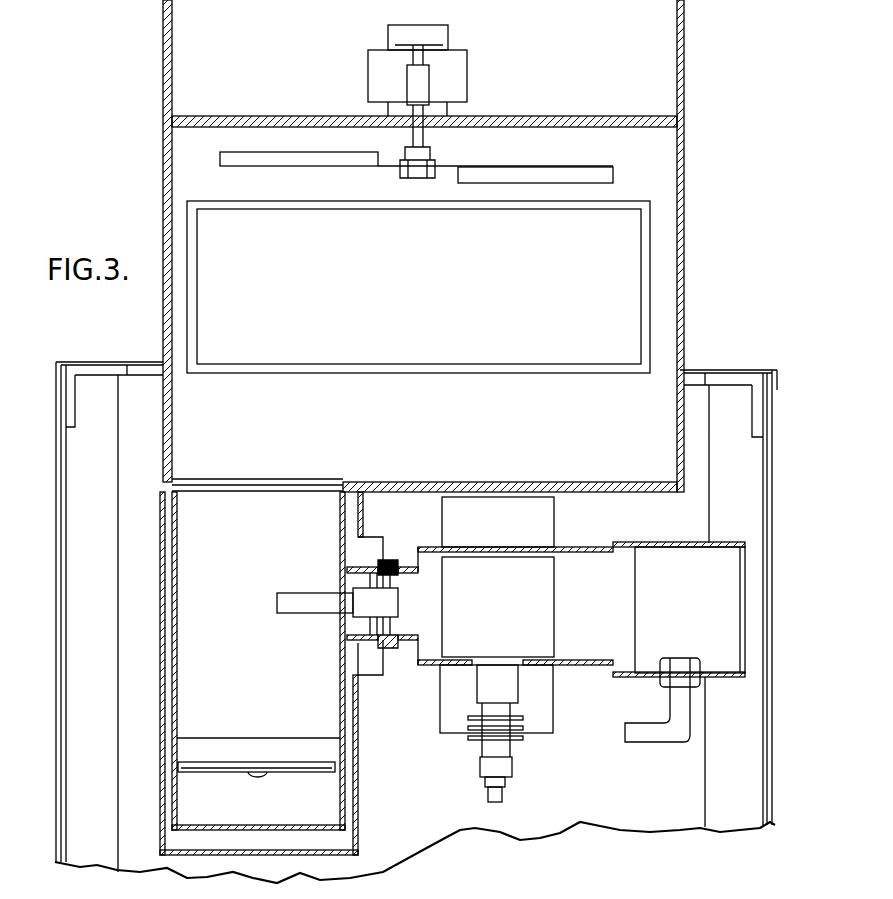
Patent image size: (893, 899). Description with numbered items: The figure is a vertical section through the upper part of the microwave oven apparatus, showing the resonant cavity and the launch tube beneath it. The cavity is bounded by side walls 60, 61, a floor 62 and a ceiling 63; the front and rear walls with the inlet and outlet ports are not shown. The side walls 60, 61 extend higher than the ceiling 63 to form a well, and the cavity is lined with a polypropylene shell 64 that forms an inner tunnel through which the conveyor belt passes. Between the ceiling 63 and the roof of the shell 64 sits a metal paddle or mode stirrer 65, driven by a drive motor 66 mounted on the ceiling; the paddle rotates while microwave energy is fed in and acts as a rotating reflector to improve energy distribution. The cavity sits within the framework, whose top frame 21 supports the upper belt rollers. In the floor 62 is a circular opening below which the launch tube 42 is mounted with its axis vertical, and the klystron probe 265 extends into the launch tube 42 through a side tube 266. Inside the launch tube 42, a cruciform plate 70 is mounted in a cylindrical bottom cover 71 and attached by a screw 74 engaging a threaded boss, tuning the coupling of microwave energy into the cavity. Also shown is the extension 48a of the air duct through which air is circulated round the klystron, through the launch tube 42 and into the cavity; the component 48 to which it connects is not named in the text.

The top frame 21 is at (761, 397).
The launch tube 42 is at (343, 813).
The valve housing 48 is at (745, 640).
The air duct extension 48a is at (633, 735).
The side wall 60 is at (685, 200).
The side wall 61 is at (163, 193).
The floor 62 is at (445, 482).
The ceiling 63 is at (525, 118).
The polypropylene shell 64 is at (458, 371).
The mode stirrer 65 is at (583, 178).
The drive motor 66 is at (452, 62).
The cruciform plate 70 is at (312, 772).
The cylindrical bottom cover 71 is at (270, 755).
The screw 74 is at (257, 775).
The klystron probe 265 is at (303, 605).
The side tube 266 is at (358, 645).